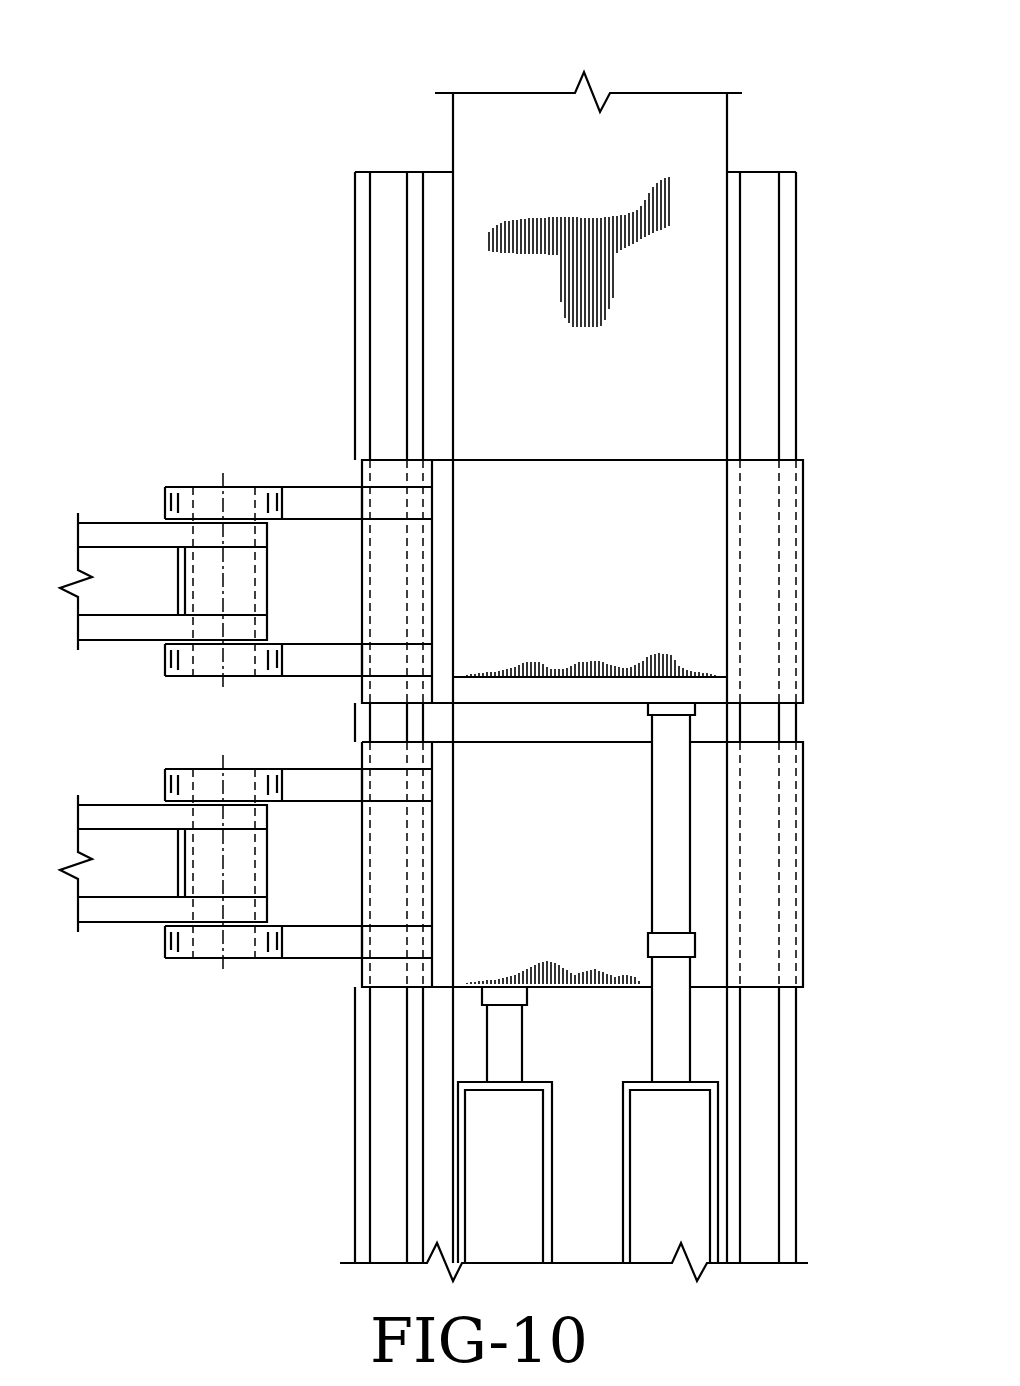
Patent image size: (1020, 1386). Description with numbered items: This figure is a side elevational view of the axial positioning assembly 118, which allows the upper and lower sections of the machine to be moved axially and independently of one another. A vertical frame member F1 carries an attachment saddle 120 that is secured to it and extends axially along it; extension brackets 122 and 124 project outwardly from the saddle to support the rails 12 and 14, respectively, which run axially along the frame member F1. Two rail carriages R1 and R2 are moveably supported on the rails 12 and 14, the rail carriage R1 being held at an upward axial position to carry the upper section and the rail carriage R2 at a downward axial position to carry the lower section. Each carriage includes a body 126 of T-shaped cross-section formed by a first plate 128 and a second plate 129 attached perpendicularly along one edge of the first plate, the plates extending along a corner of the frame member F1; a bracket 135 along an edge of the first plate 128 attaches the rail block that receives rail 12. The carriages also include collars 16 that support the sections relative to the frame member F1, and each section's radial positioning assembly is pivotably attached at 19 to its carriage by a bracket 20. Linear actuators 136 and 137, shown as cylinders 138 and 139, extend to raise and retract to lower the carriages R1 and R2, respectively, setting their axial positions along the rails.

The frame member F1 is at (509, 122).
The attachment saddle 120 is at (575, 684).
The extension bracket 122 is at (368, 262).
The rail 12 is at (390, 345).
The extension bracket 124 is at (785, 262).
The rail 14 is at (760, 345).
The body 126 is at (617, 489).
The first plate 128 is at (440, 557).
The second plate 129 is at (624, 587).
The rail carriage R1 is at (808, 565).
The rail carriage R2 is at (808, 850).
The bracket 135 is at (365, 472).
The collar 16 is at (211, 484).
The pivotable attachment 19 is at (197, 683).
The bracket 20 is at (109, 521).
The axial positioning assembly 118 is at (628, 1011).
The linear actuator 136 is at (755, 983).
The linear actuator 137 is at (416, 1125).
The cylinder 138 is at (697, 1157).
The cylinder 139 is at (504, 1176).